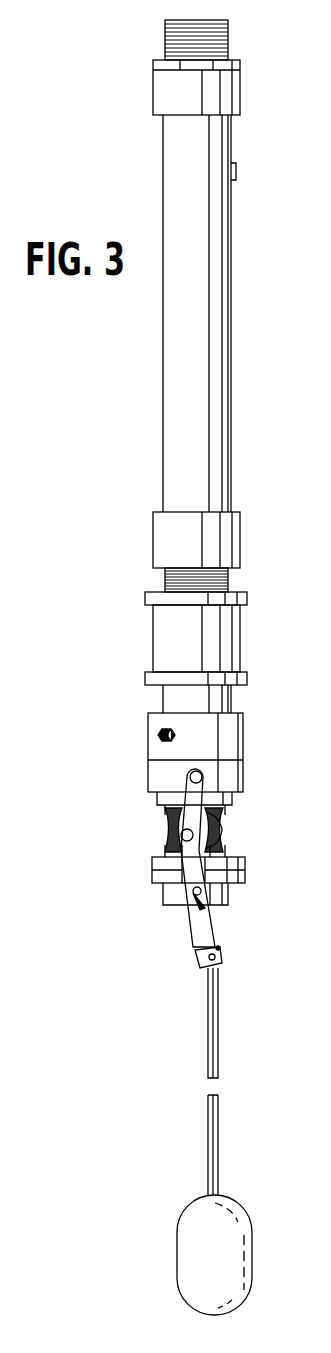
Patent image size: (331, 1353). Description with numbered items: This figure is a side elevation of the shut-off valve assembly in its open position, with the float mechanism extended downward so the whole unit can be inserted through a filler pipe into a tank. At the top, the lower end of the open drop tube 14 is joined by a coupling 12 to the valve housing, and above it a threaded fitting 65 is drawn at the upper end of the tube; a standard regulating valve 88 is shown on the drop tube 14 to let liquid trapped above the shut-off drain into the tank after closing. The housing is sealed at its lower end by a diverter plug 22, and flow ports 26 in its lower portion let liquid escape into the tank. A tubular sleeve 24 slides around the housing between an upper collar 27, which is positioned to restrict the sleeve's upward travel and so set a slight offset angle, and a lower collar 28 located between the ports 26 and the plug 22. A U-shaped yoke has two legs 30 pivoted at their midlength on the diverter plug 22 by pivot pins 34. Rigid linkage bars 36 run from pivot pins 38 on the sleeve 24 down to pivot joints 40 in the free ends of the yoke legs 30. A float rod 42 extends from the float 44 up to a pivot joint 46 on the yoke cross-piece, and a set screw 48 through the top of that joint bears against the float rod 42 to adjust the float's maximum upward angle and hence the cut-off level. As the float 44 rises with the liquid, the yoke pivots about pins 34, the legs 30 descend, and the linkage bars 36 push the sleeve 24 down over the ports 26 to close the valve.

The coupling 12 is at (241, 640).
The drop tube 14 is at (232, 300).
The diverter plug 22 is at (163, 895).
The sleeve 24 is at (150, 792).
The flow ports 26 is at (222, 818).
The upper collar 27 is at (243, 733).
The lower collar 28 is at (246, 868).
The yoke legs 30 is at (152, 870).
The pivot pins 34 is at (205, 905).
The linkage bars 36 is at (165, 812).
The pivot pins 38 is at (202, 777).
The pivot joints 40 is at (221, 838).
The float rod 42 is at (219, 1060).
The float 44 is at (235, 1198).
The pivot joint 46 is at (195, 958).
The set screw 48 is at (218, 948).
The cap nut 65 is at (241, 65).
The regulating valve 88 is at (238, 172).